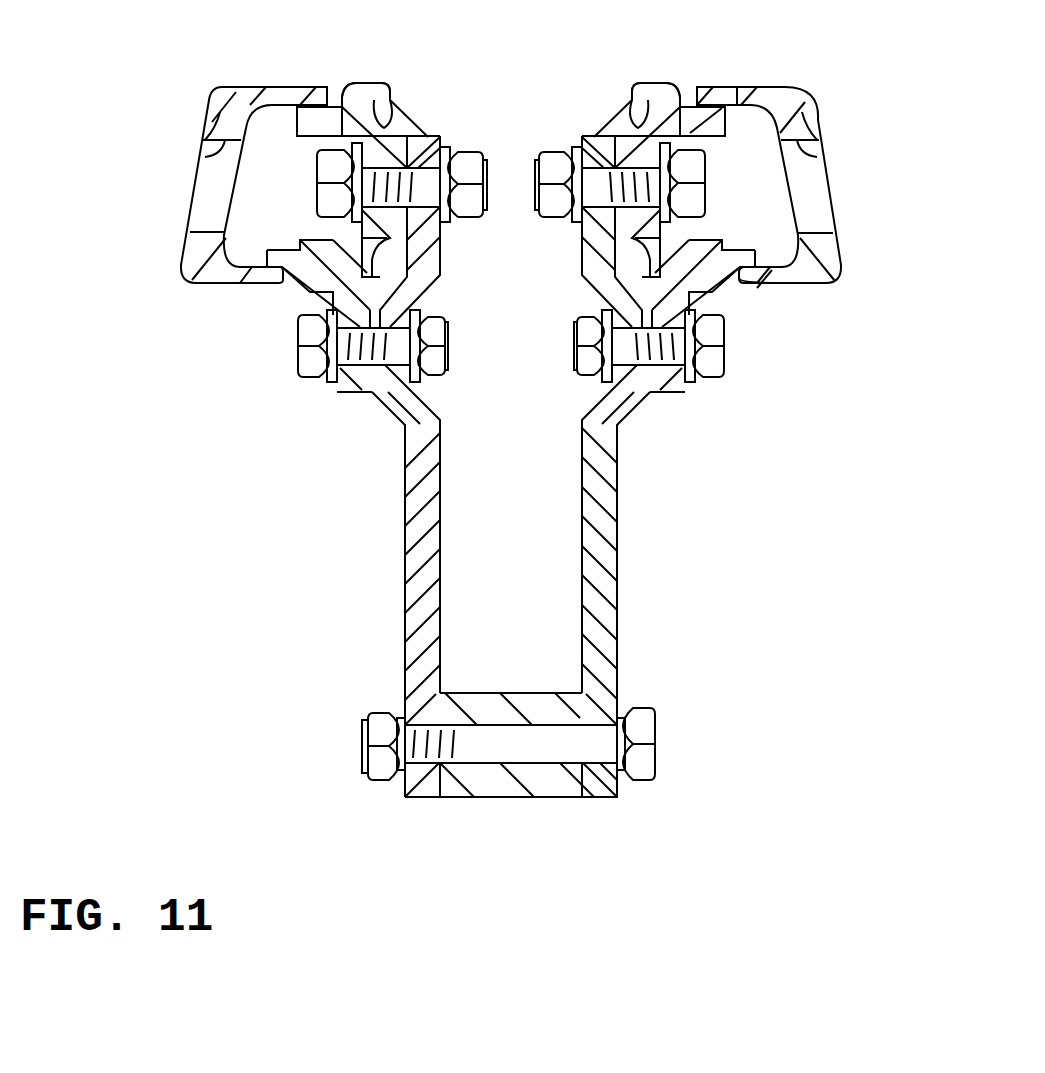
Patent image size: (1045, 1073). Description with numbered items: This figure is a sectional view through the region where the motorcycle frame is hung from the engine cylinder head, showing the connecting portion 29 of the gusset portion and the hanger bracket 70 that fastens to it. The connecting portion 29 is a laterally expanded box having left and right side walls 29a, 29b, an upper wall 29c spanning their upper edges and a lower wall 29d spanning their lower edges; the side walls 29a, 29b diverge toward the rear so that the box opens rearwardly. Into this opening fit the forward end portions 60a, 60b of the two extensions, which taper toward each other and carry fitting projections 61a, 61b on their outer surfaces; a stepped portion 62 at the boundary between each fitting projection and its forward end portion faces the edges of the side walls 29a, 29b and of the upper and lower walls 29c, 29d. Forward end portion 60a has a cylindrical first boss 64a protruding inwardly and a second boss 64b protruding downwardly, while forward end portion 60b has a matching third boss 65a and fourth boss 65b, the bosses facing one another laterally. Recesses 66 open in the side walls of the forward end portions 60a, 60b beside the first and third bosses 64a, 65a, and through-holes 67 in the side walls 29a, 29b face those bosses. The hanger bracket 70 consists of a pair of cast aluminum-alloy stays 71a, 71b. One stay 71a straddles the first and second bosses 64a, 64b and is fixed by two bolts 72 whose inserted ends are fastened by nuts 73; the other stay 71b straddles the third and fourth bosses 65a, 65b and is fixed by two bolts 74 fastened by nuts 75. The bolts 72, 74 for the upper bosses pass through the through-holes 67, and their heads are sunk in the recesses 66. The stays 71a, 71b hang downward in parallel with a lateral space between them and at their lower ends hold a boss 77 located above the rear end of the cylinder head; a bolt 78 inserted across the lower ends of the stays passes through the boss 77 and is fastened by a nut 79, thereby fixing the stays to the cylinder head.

The connecting portion 29 is at (805, 99).
The left side wall 29a is at (188, 197).
The right side wall 29b is at (838, 203).
The upper wall 29c is at (305, 87).
The lower wall 29d is at (772, 290).
The forward end portion 60a is at (348, 118).
The forward end portion 60b is at (680, 140).
The fitting projection 61a is at (302, 120).
The fitting projection 61b is at (712, 133).
The stepped portion 62 is at (336, 92).
The first boss 64a is at (393, 135).
The second boss 64b is at (355, 385).
The third boss 65a is at (633, 140).
The fourth boss 65b is at (667, 387).
The recess 66 is at (315, 237).
The through-hole 67 is at (203, 150).
The hanger bracket 70 is at (447, 581).
The stay 71a is at (405, 530).
The stay 71b is at (590, 585).
The bolt 72 is at (327, 187).
The nut 73 is at (460, 160).
The bolt 74 is at (697, 190).
The nut 75 is at (553, 217).
The boss 77 is at (512, 787).
The bolt 78 is at (645, 748).
The nut 79 is at (383, 777).